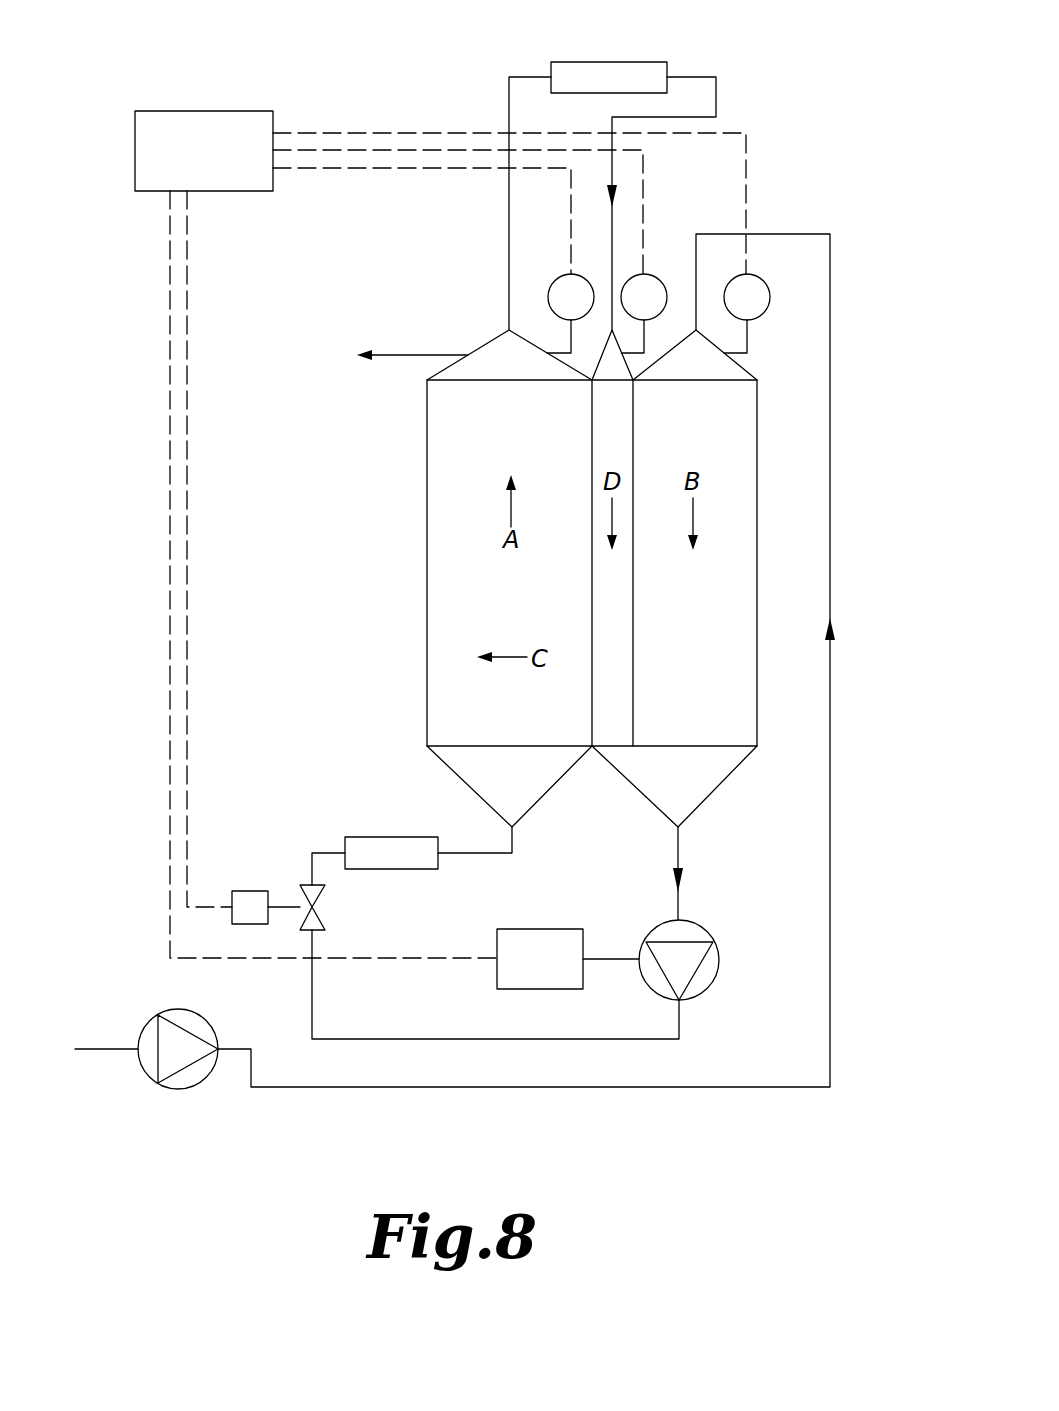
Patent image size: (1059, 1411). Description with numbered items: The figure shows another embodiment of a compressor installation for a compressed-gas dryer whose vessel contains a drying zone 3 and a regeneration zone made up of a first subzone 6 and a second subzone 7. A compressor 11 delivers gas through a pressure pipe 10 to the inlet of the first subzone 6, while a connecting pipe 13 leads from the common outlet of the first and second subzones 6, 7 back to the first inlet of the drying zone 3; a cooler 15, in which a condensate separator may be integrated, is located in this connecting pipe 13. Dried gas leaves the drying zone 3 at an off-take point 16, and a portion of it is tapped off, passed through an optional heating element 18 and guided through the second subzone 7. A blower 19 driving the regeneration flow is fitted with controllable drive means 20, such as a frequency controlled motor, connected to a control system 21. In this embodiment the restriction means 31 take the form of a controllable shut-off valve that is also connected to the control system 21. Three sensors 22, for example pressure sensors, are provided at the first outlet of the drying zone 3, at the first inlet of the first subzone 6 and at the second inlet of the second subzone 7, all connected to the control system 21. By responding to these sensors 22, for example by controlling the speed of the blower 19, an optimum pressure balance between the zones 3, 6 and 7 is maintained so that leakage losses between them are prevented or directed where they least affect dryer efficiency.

The drying zone 3 is at (467, 590).
The first subzone 6 is at (745, 427).
The second subzone 7 is at (620, 653).
The pressure pipe 10 is at (533, 1088).
The compressor 11 is at (190, 1087).
The connecting pipe 13 is at (679, 898).
The cooler 15 is at (350, 837).
The off-take point 16 is at (468, 352).
The heating element 18 is at (608, 78).
The blower 19 is at (708, 990).
The drive means 20 is at (520, 990).
The control system 21 is at (249, 135).
The sensors 22 is at (581, 293).
The restriction means 31 is at (275, 872).